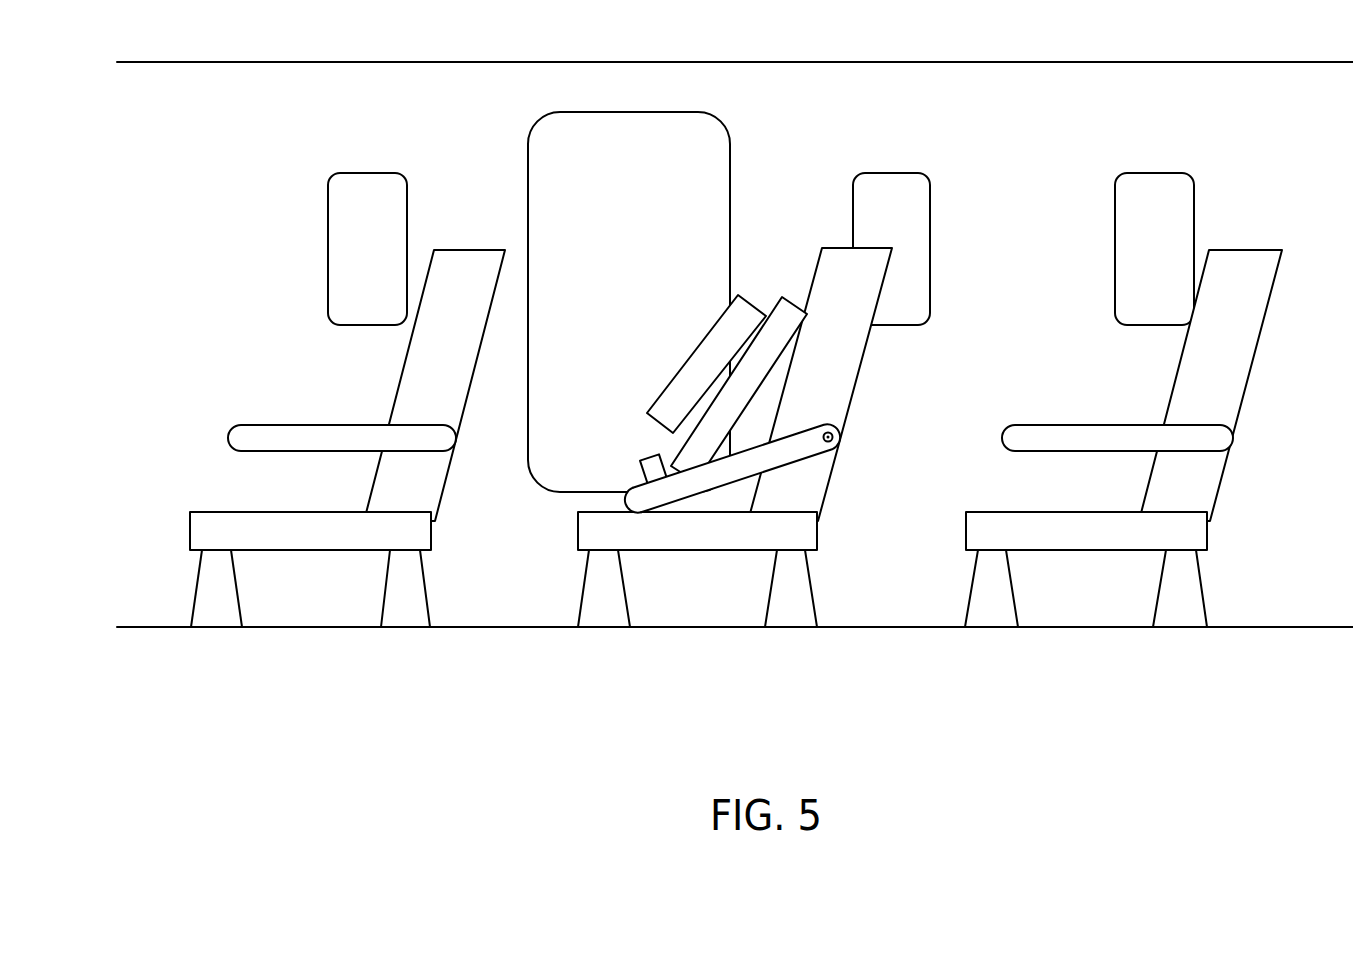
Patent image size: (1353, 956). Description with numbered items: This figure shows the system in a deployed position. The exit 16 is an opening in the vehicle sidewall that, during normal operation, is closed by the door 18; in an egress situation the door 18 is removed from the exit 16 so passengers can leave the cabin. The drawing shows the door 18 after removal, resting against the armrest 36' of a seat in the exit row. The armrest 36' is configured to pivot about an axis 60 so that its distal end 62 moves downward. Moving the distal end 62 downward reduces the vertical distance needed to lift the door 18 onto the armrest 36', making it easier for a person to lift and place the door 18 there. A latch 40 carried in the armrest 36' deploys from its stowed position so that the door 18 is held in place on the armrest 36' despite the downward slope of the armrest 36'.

The exit 16 is at (730, 195).
The door 18 is at (763, 290).
The latch 40 is at (647, 467).
The armrest 36' is at (761, 469).
The axis 60 is at (841, 436).
The distal end 62 is at (633, 500).